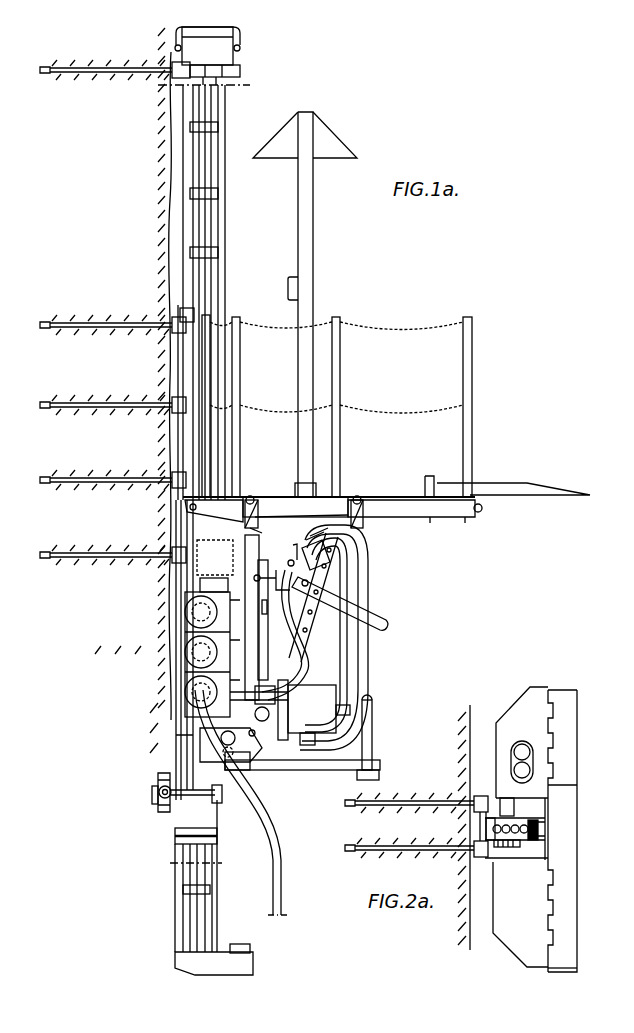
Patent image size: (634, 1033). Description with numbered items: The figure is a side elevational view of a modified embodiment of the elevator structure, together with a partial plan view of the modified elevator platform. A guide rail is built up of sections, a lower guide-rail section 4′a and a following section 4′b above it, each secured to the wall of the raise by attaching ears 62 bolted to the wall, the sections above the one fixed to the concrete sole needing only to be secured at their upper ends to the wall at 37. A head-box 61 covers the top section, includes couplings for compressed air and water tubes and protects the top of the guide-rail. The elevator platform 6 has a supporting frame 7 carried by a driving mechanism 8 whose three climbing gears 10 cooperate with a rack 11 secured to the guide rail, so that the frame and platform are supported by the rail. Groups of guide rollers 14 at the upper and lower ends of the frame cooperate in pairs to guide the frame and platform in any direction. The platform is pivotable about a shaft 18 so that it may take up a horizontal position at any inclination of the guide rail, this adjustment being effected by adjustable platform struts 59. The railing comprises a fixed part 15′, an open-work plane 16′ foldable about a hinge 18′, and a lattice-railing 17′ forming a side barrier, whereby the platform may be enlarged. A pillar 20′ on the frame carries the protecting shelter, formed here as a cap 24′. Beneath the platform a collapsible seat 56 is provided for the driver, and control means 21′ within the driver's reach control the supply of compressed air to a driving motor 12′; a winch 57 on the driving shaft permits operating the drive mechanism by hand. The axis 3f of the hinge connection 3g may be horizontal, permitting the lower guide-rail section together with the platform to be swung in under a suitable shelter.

In FIG. 1A, the wall securing point 37 is at (118, 68).
In FIG. 1A, the attaching ears 62 is at (172, 67).
In FIG. 2A, the attaching ears 62 is at (482, 796).
In FIG. 1A, the head-box 61 is at (222, 50).
In FIG. 1A, the guide-rail section 4′b is at (183, 214).
In FIG. 1A, the cap 24′ is at (328, 148).
In FIG. 1A, the pillar 20′ is at (313, 221).
In FIG. 1A, the fixed part of railing 15′ is at (340, 366).
In FIG. 1A, the lattice-railing 17′ is at (472, 365).
In FIG. 1A, the hinge 18 is at (250, 496).
In FIG. 2A, the hinge 18 is at (552, 968).
In FIG. 1A, the elevator platform 6 is at (289, 495).
In FIG. 2A, the elevator platform 6 is at (560, 836).
In FIG. 1A, the hinge 18′ is at (358, 496).
In FIG. 1A, the open-work plane 16′ is at (401, 497).
In FIG. 1A, the control means 21′ is at (300, 544).
In FIG. 1A, the supporting frame 7 is at (248, 557).
In FIG. 1A, the hand-crank winch 57 is at (262, 587).
In FIG. 1A, the adjustable platform struts 59 is at (299, 636).
In FIG. 1A, the driving motor 12′ is at (300, 696).
In FIG. 1A, the driving mechanism 8 is at (195, 616).
In FIG. 1A, the climbing gears 10 is at (200, 698).
In FIG. 2A, the climbing gears 10 is at (505, 847).
In FIG. 1A, the guide rollers 14 is at (238, 755).
In FIG. 1A, the collapsible seat 56 is at (358, 759).
In FIG. 1A, the hinge axis 3f is at (158, 793).
In FIG. 1A, the hinge connection 3g is at (156, 806).
In FIG. 1A, the guide-rail section 4′a is at (180, 884).
In FIG. 2A, the rack 11 is at (530, 821).